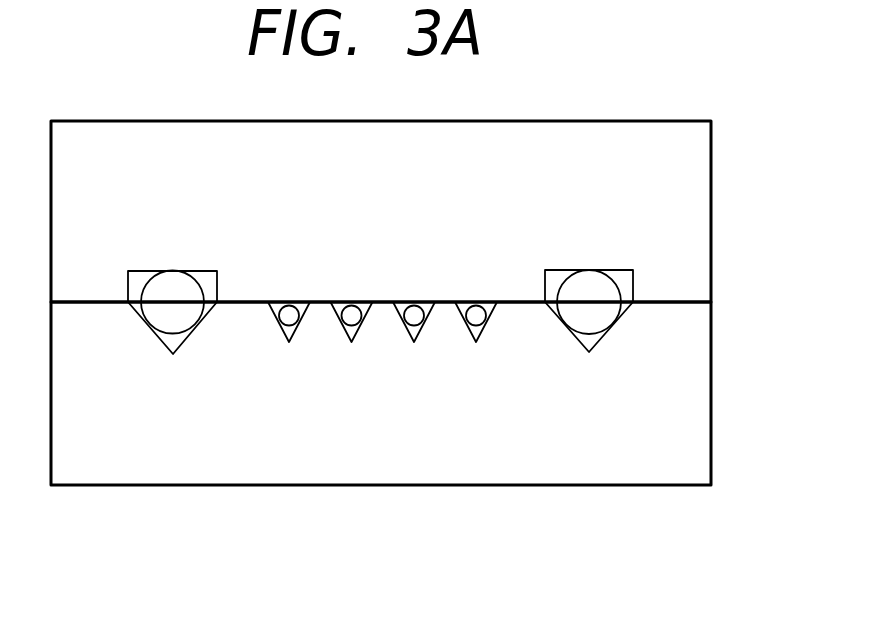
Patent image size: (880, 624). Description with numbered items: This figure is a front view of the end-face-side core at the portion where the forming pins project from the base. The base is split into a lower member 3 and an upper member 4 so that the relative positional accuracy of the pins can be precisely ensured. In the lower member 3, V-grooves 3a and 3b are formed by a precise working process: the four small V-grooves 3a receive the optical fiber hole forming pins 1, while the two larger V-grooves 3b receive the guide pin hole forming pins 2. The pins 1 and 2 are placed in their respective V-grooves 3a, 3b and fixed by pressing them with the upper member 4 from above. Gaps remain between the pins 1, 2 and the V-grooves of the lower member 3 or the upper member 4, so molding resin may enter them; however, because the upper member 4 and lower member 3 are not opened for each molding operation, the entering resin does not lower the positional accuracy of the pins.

The optical fiber hole forming pin 1 is at (423, 316).
The guide pin hole forming pin 2 is at (598, 313).
The lower member 3 is at (692, 382).
The V-groove 3a is at (488, 316).
The V-groove 3b is at (610, 338).
The upper member 4 is at (692, 182).